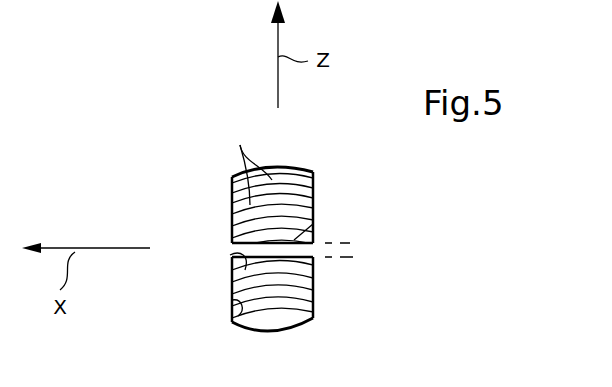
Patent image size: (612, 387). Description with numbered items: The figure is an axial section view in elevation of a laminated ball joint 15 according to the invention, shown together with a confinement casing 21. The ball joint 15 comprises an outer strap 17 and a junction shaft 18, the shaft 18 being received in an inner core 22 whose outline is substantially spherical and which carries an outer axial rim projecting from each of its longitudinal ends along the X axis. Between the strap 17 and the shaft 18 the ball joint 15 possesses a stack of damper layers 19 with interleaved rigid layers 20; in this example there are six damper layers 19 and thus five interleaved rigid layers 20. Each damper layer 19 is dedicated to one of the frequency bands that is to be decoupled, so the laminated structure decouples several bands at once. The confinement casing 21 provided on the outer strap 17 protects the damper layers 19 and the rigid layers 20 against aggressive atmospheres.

The laminated ball joint 15 is at (266, 214).
The outer strap 17 is at (303, 168).
The damper layers 19 is at (249, 158).
The confinement casing 21 is at (313, 197).
The inner core 22 is at (313, 224).
The junction shaft 18 is at (340, 250).
The interleaved rigid layer 20 is at (230, 255).